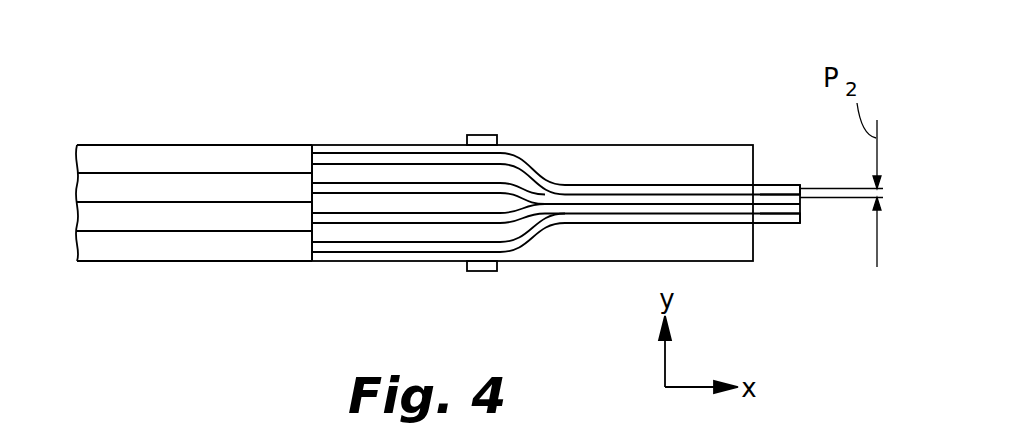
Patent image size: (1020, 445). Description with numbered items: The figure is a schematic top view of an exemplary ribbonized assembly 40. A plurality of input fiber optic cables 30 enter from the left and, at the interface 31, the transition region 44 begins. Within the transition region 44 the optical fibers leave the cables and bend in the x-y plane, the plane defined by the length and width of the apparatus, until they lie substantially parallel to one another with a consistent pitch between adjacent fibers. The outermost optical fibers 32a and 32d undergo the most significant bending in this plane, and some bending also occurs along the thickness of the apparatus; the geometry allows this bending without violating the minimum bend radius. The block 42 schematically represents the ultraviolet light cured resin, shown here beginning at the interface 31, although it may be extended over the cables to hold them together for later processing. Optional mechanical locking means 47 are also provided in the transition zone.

The ribbonized assembly 40 is at (687, 55).
The input fiber optic cables 30 is at (163, 183).
The interface 31 is at (317, 149).
The block 42 is at (708, 157).
The mechanical locking means 47 is at (482, 142).
The transition region 44 is at (407, 232).
The optical fiber 32d is at (778, 188).
The optical fiber 32a is at (780, 225).